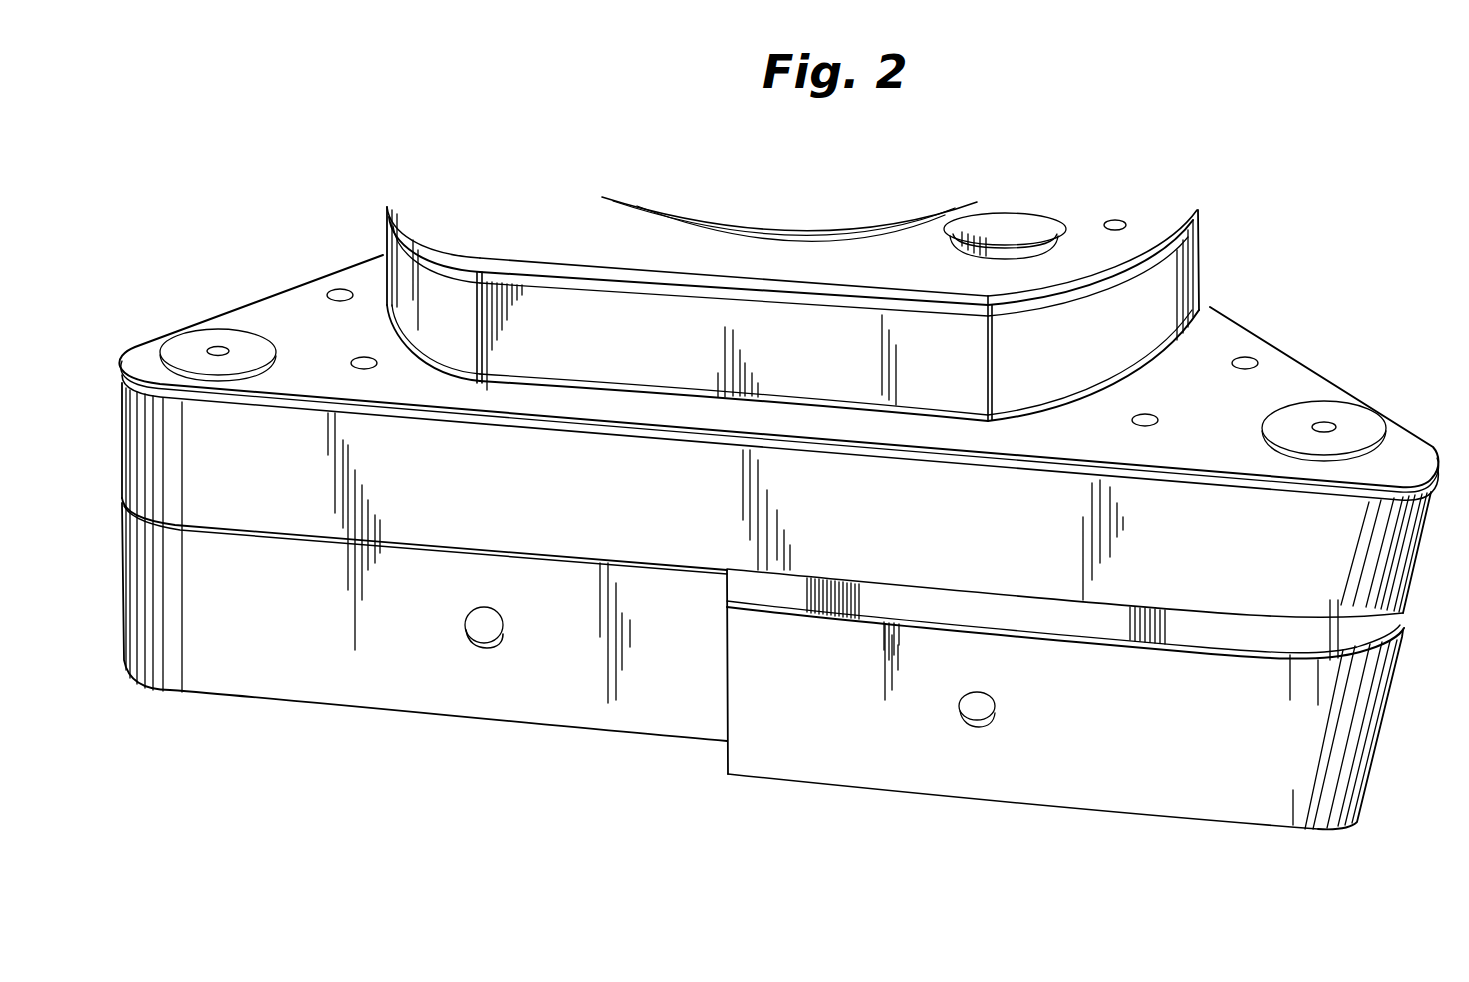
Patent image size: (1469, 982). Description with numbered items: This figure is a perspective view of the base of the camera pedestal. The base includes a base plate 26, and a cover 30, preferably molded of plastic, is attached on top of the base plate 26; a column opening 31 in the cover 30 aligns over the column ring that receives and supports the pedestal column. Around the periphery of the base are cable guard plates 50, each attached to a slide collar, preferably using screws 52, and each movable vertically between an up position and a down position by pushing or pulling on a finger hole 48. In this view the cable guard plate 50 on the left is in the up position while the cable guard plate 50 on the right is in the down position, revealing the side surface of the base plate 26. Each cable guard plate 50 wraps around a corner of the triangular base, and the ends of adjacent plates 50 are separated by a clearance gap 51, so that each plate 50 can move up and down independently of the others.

The base plate 26 is at (1188, 626).
The cover 30 is at (723, 540).
The column opening 31 is at (745, 202).
The finger hole 48 is at (988, 722).
The cable guard plate 50 is at (905, 720).
The clearance gap 51 is at (729, 708).
The screws 52 is at (1123, 713).